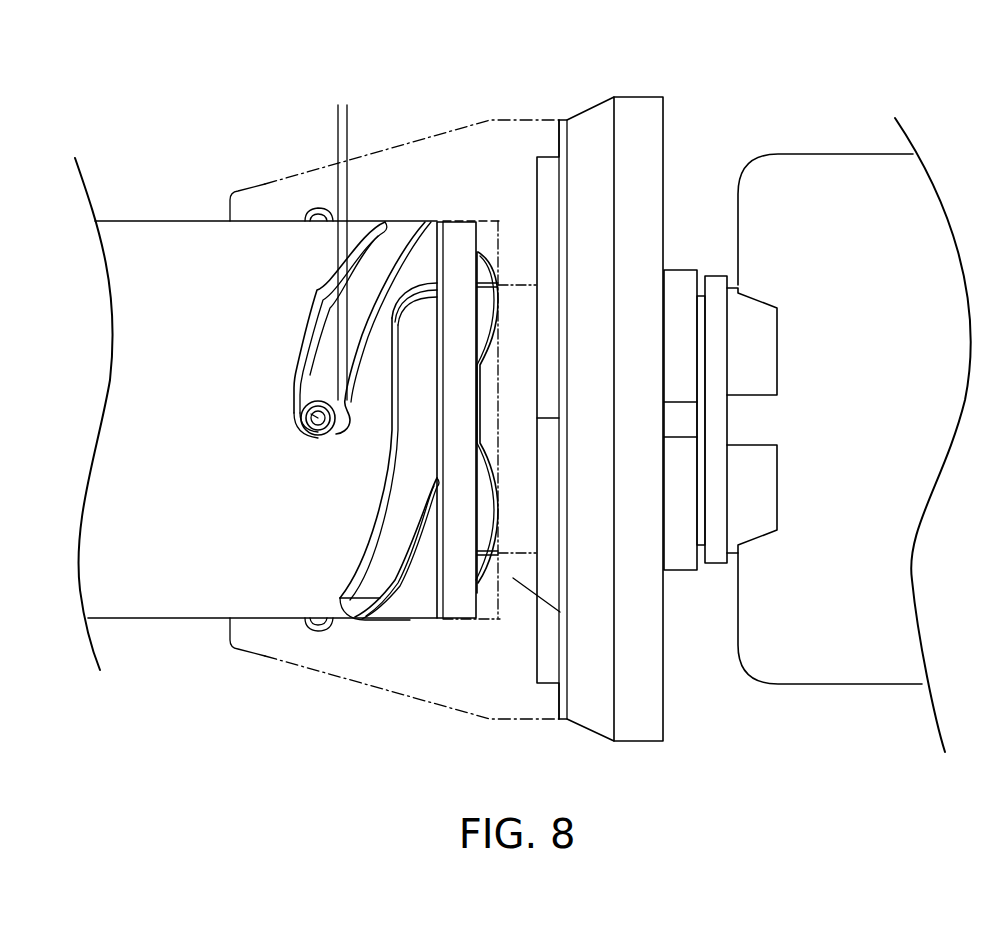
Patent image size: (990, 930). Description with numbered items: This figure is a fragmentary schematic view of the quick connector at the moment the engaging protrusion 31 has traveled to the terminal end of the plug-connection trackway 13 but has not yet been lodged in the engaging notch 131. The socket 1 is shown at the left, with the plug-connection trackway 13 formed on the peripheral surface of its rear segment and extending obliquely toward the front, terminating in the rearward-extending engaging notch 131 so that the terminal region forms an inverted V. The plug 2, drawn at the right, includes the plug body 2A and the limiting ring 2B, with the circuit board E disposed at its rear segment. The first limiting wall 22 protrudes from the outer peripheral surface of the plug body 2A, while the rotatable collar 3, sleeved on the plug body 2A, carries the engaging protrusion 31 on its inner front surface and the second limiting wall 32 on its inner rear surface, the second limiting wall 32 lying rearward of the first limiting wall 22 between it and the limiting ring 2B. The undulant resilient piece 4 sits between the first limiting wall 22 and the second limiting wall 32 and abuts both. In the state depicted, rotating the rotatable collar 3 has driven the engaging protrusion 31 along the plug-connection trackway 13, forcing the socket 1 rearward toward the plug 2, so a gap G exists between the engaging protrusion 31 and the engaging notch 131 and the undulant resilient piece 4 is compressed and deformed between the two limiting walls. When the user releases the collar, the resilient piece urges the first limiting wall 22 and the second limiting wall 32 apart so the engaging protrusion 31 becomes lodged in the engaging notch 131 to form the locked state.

The socket 1 is at (105, 568).
The rotatable collar 3 is at (494, 146).
The plug 2 is at (670, 370).
The plug body 2A is at (683, 283).
The limiting ring 2B is at (643, 115).
The circuit board E is at (810, 663).
The first limiting wall 22 is at (463, 600).
The undulant resilient piece 4 is at (485, 570).
The plug-connection trackway 13 is at (325, 336).
The engaging protrusion 31 is at (300, 417).
The engaging notch 131 is at (353, 437).
The second limiting wall 32 is at (560, 612).
The gap G is at (291, 114).